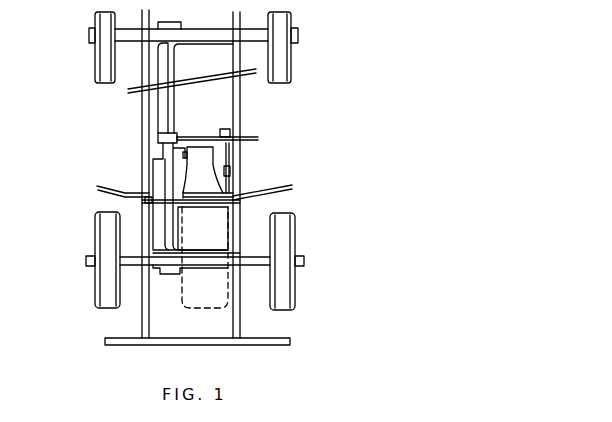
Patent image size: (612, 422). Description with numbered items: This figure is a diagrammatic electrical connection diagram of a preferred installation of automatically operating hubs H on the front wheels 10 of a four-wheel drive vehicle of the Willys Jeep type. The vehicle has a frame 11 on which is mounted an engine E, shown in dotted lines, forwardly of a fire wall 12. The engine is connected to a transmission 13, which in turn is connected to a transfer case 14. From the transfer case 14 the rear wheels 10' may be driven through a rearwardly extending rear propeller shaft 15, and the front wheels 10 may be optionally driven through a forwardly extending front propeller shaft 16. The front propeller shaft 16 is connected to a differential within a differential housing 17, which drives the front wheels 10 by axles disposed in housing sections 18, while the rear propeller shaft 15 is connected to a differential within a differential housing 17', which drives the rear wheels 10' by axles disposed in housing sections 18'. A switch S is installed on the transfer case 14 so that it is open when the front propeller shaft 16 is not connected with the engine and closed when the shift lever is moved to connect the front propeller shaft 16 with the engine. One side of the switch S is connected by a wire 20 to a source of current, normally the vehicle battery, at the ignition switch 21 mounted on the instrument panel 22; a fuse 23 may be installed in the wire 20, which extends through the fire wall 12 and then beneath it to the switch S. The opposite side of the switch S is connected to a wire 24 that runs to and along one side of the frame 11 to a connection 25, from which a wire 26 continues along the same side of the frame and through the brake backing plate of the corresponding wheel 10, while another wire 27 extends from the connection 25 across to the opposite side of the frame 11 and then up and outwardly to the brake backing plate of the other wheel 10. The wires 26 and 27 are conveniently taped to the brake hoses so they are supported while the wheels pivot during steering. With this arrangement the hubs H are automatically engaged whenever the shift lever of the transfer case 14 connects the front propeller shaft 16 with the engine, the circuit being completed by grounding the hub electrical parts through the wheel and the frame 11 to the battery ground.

The front wheels 10 is at (190, 261).
The rear wheels 10' is at (194, 50).
The frame 11 is at (149, 316).
The fire wall 12 is at (280, 188).
The transmission 13 is at (209, 186).
The transfer case 14 is at (162, 140).
The rear propeller shaft 15 is at (176, 106).
The front propeller shaft 16 is at (184, 210).
The differential housing 17 is at (190, 282).
The housing sections 18 is at (175, 282).
The differential housing 17' is at (191, 58).
The housing sections 18' is at (214, 56).
The wire 20 is at (242, 153).
The ignition switch 21 is at (230, 129).
The instrument panel 22 is at (258, 135).
The fuse 23 is at (232, 170).
The wire 24 is at (143, 176).
The connection 25 is at (143, 200).
The wire 26 is at (150, 226).
The wire 27 is at (230, 233).
The switch S is at (184, 155).
The hubs H is at (86, 262).
The engine E is at (234, 302).